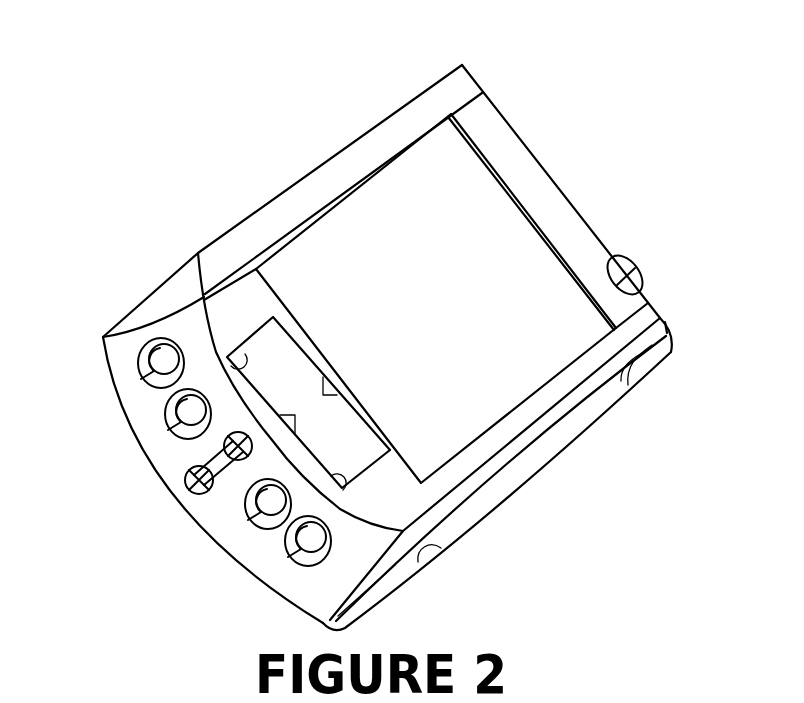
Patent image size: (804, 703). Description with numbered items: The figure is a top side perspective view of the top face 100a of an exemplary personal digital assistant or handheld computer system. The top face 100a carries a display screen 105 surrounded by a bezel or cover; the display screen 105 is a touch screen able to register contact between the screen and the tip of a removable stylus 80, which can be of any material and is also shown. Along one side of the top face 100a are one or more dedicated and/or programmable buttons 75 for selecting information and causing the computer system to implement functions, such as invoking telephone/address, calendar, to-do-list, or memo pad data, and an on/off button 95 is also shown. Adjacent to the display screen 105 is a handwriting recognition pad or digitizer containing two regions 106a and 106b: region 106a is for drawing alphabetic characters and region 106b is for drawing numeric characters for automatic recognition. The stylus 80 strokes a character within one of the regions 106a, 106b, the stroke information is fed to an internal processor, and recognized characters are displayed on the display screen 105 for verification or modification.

The top face 100a is at (110, 94).
The buttons 75 is at (160, 340).
The display screen 105 is at (462, 313).
The region 106a is at (303, 383).
The region 106b is at (365, 453).
The on/off button 95 is at (637, 272).
The stylus 80 is at (568, 431).